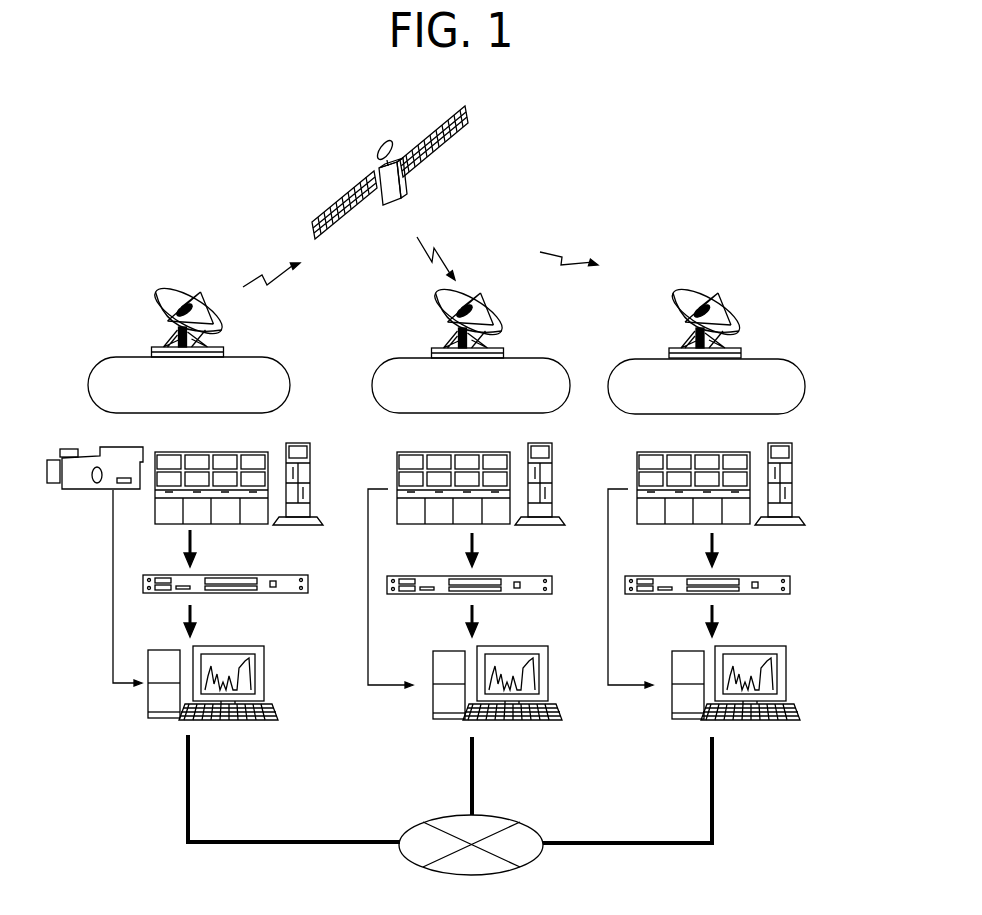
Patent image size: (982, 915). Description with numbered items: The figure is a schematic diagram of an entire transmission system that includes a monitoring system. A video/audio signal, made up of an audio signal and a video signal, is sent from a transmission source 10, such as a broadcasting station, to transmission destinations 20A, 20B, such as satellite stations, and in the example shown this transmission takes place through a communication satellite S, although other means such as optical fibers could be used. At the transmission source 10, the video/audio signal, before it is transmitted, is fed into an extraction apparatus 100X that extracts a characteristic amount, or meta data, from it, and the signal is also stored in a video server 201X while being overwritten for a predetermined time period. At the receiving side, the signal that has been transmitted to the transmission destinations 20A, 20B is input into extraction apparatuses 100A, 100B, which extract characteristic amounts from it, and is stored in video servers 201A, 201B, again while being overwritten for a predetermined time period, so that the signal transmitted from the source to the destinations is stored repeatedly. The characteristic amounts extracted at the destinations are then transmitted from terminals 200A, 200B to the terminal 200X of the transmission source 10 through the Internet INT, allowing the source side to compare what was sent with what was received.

The communication satellite S is at (467, 113).
The transmission source 10 is at (290, 363).
The transmission destination 20A is at (517, 358).
The transmission destination 20B is at (754, 358).
The extraction apparatus 100X is at (308, 583).
The extraction apparatus 100A is at (550, 583).
The extraction apparatus 100B is at (788, 583).
The terminal 200X is at (264, 661).
The terminal 200A is at (523, 647).
The terminal 200B is at (763, 647).
The video server 201X is at (148, 702).
The video server 201A is at (432, 703).
The video server 201B is at (672, 703).
The Internet INT is at (510, 815).